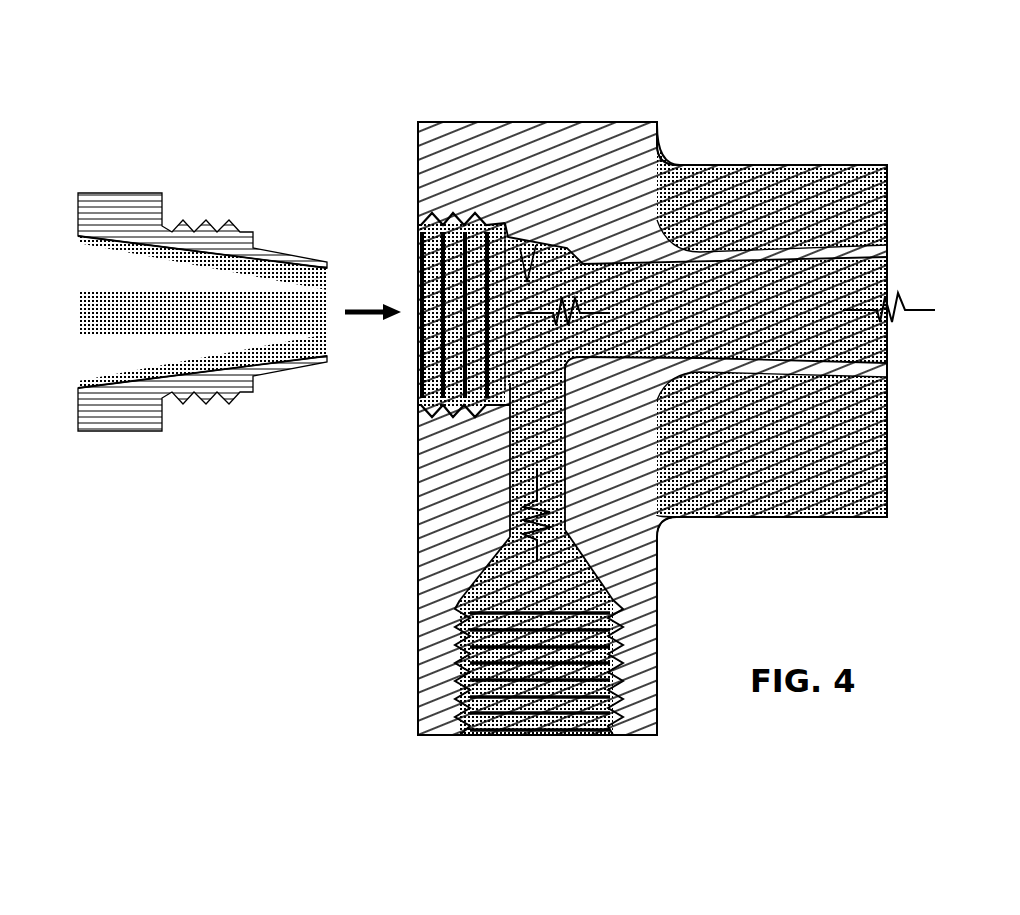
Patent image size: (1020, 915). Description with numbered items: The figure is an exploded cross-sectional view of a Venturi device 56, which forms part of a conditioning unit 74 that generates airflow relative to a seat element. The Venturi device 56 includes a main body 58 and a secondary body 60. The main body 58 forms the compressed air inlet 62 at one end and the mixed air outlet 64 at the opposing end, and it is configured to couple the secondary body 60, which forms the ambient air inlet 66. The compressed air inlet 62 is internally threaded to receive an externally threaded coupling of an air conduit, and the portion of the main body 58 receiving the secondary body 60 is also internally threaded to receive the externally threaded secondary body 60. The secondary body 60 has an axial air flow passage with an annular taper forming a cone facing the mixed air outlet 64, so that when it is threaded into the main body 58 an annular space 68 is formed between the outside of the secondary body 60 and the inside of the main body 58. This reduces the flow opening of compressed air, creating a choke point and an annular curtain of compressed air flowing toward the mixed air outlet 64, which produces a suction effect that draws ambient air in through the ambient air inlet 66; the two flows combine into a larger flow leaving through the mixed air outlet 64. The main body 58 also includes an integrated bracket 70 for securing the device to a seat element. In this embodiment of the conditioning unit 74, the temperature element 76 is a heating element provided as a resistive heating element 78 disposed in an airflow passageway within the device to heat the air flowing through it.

The Venturi device 56 is at (690, 73).
The main body 58 is at (766, 165).
The secondary body 60 is at (158, 192).
The compressed air inlet 62 is at (538, 753).
The mixed air outlet 64 is at (880, 345).
The ambient air inlet 66 is at (104, 311).
The annular space 68 is at (523, 270).
The integrated bracket 70 is at (888, 468).
The conditioning unit 74 is at (410, 774).
The temperature element 76 is at (516, 554).
The resistive heating element 78 is at (515, 521).